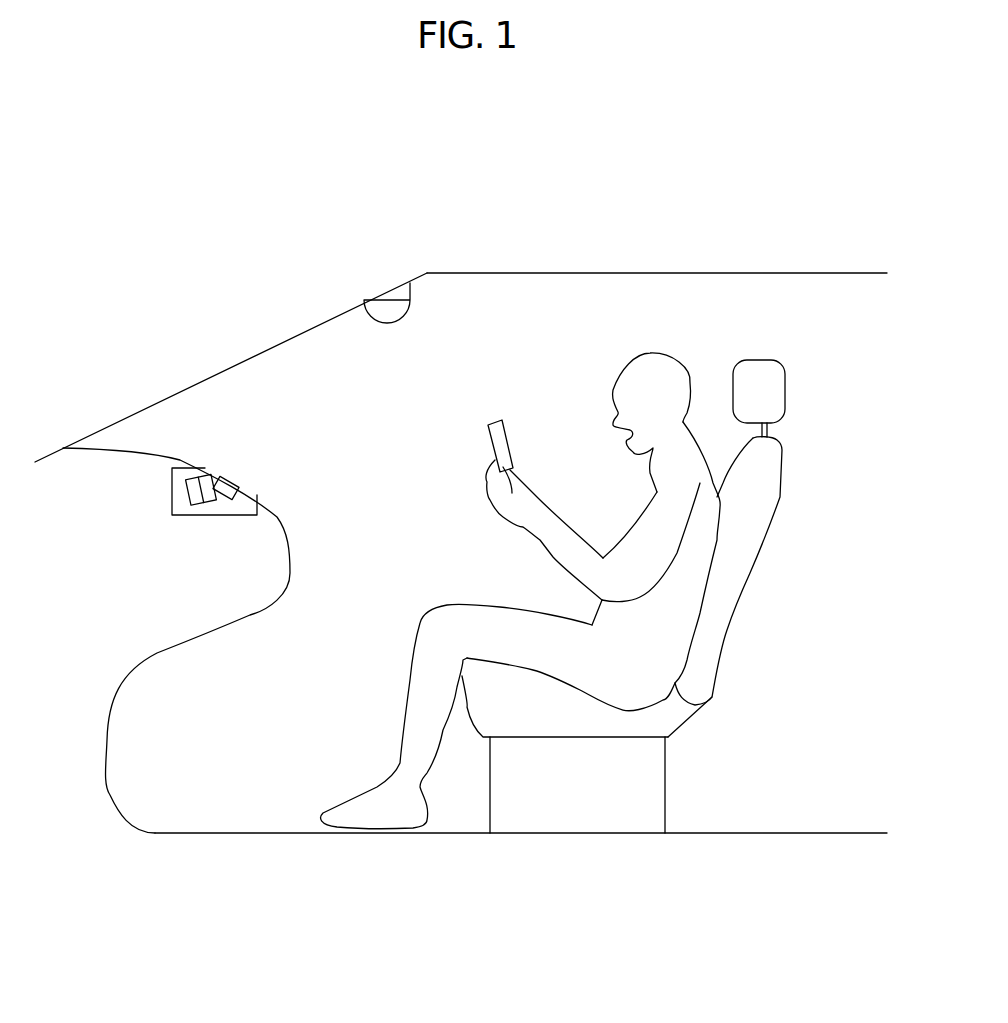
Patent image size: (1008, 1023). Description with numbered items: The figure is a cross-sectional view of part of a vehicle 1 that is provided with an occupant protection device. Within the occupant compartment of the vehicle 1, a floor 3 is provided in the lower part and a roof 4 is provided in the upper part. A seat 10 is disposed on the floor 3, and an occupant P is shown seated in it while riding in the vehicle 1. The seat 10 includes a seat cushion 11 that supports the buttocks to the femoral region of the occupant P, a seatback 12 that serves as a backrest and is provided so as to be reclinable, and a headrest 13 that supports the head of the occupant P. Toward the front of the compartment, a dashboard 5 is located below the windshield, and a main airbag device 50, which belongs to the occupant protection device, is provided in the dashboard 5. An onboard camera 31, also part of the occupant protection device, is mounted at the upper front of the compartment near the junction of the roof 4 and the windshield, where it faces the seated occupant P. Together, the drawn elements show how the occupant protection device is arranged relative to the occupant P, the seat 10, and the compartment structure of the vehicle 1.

The vehicle 1 is at (772, 227).
The floor 3 is at (857, 832).
The roof 4 is at (855, 273).
The dashboard 5 is at (145, 463).
The seat 10 is at (667, 596).
The seat cushion 11 is at (620, 725).
The seatback 12 is at (713, 618).
The headrest 13 is at (777, 397).
The onboard camera 31 is at (387, 323).
The main airbag device 50 is at (223, 498).
The occupant P is at (660, 353).